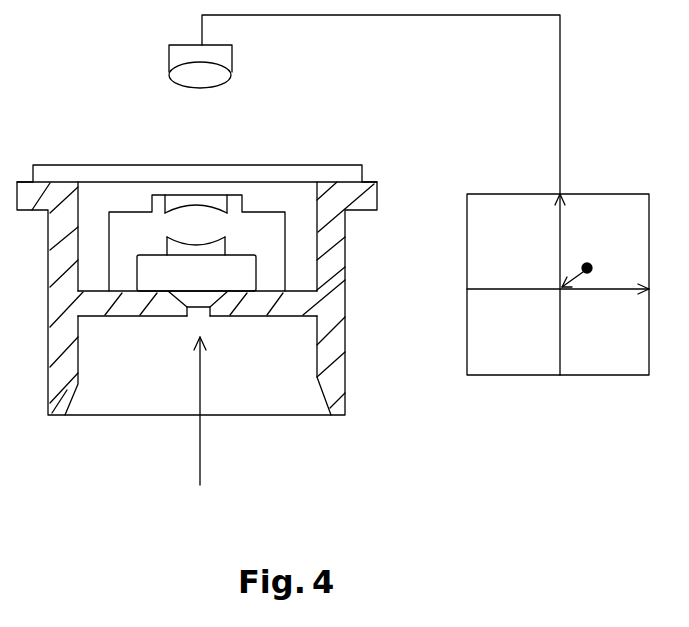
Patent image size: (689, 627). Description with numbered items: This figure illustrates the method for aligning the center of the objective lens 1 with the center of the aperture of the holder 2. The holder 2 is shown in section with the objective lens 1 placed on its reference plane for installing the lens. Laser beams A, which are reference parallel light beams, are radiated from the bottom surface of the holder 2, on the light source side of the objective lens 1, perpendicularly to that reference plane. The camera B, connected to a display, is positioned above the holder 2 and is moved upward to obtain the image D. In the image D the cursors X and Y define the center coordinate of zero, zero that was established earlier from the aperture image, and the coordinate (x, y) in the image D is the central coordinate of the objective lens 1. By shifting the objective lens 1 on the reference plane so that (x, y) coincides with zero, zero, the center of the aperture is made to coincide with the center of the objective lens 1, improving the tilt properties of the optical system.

The objective lens 1 is at (152, 220).
The holder 2 is at (345, 400).
The laser beams A is at (215, 411).
The camera B is at (364, 104).
The image D is at (565, 299).